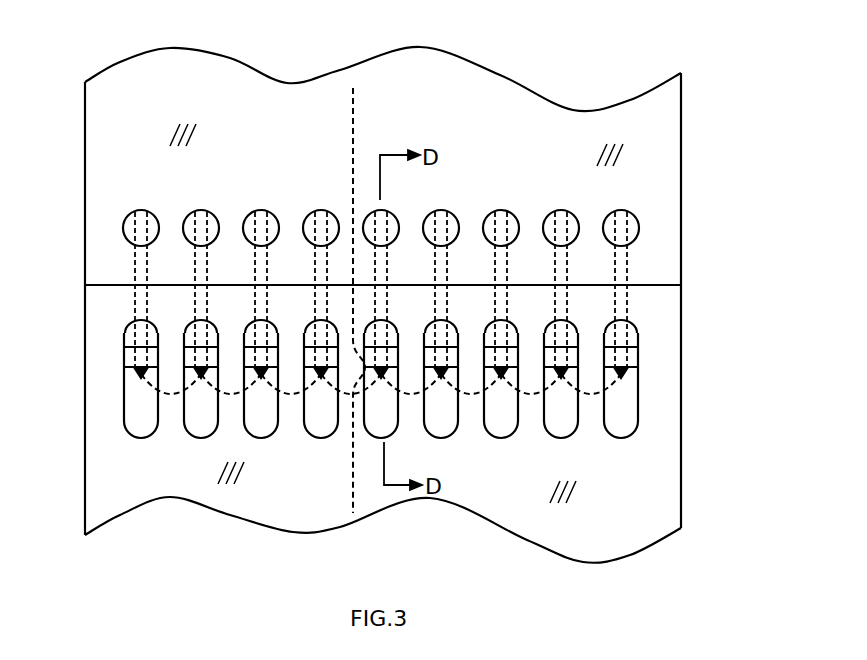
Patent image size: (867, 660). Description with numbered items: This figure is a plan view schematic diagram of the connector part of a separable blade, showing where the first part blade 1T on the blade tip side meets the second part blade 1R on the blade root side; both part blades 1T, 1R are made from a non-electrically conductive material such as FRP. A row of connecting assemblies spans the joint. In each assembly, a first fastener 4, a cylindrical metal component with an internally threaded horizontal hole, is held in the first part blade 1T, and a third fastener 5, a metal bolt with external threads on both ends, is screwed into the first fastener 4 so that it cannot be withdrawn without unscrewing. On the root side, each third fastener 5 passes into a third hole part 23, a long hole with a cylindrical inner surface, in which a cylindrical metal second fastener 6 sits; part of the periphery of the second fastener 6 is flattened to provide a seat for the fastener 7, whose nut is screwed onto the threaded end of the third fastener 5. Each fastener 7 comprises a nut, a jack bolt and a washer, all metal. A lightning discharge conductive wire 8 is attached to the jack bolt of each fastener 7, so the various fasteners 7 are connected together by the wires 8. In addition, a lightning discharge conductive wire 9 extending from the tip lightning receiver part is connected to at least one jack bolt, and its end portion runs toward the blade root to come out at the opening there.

The first part blade 1T is at (650, 143).
The second part blade 1R is at (655, 451).
The first fastener 4 is at (124, 225).
The third fastener 5 is at (138, 273).
The second fastener 6 is at (126, 333).
The fastener 7 is at (132, 360).
The lightning discharge conductive wire 8 is at (375, 431).
The lightning discharge conductive wire 9 is at (351, 478).
The third hole part 23 is at (160, 413).